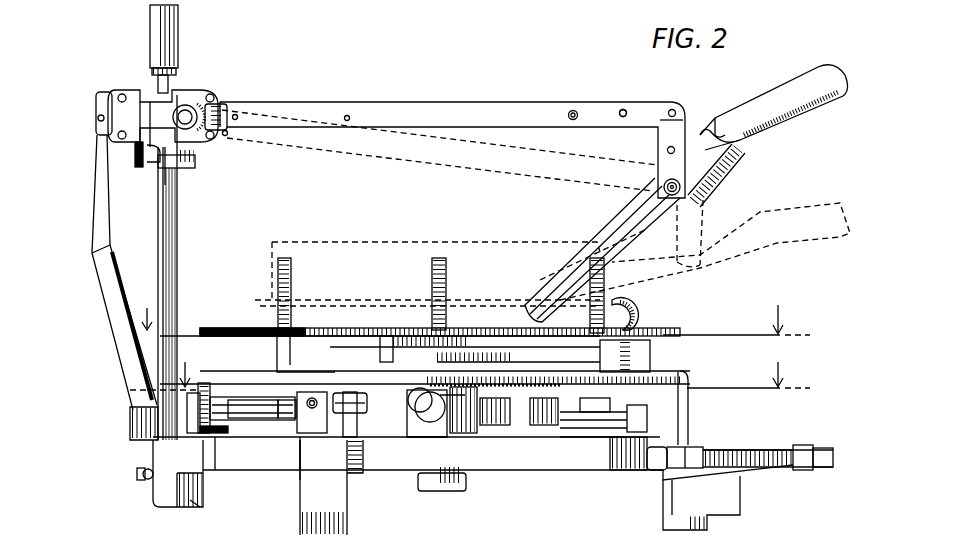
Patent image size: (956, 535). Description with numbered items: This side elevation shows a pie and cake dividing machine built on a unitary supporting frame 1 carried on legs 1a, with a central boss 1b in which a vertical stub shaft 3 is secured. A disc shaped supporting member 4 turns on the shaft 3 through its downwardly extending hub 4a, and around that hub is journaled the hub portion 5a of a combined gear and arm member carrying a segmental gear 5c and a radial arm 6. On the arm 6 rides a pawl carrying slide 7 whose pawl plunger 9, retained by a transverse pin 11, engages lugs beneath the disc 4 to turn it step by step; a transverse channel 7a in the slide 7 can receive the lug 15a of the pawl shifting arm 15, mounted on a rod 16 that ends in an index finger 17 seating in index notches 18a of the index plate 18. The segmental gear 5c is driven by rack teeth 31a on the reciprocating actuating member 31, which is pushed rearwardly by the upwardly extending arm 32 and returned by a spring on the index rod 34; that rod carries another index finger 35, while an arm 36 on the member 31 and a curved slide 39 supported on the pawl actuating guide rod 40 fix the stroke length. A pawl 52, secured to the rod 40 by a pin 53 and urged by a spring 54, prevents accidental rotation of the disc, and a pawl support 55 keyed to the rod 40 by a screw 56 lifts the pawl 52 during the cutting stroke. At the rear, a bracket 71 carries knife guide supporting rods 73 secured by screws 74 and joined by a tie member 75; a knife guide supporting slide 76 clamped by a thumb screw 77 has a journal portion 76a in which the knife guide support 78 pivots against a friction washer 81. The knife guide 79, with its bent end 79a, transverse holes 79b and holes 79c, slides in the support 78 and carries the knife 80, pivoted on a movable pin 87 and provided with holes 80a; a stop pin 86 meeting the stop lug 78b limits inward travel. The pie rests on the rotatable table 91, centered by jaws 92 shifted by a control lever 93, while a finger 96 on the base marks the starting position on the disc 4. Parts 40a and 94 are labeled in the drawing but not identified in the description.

The supporting frame 1 is at (608, 470).
The legs 1a is at (703, 527).
The boss 1b is at (436, 490).
The vertical stub shaft 3 is at (470, 310).
The supporting disc 4 is at (716, 378).
The hub 4a is at (343, 337).
The hub portion 5a is at (410, 405).
The segmental gear 5c is at (520, 415).
The arm 6 is at (420, 425).
The pawl carrying slide 7 is at (432, 437).
The transverse channel 7a is at (456, 492).
The pawl plunger 9 is at (457, 345).
The transverse pin 11 is at (474, 380).
The pawl shifting arm 15 is at (612, 445).
The lug 15a is at (556, 432).
The rod 16 is at (658, 470).
The index finger 17 is at (703, 455).
The index plate 18 is at (828, 468).
The index notches 18a is at (776, 450).
The actuating member 31 is at (240, 400).
The rack teeth 31a is at (612, 420).
The upwardly extending arm 32 is at (112, 310).
The index rod 34 is at (780, 468).
The index finger 35 is at (808, 446).
The arm 36 is at (645, 426).
The slide 39 is at (305, 440).
The pawl actuating guide rod 40 is at (265, 420).
The bearing 40a is at (297, 417).
The pawl 52 is at (208, 385).
The pin 53 is at (221, 433).
The spring 54 is at (199, 507).
The pawl support 55 is at (324, 425).
The screw 56 is at (313, 398).
The knife guide supporting rod bracket 71 is at (160, 500).
The knife guide supporting rods 73 is at (163, 237).
The screws 74 is at (137, 476).
The tie member 75 is at (152, 18).
The knife guide supporting slide 76 is at (160, 168).
The journal portion 76a is at (216, 102).
The thumb screw 77 is at (134, 157).
The knife guide support 78 is at (140, 92).
The stop lug 78b is at (227, 136).
The knife guide 79 is at (450, 112).
The outwardly bent forward end 79a is at (680, 130).
The transverse holes 79b is at (345, 116).
The holes 79c is at (626, 110).
The knife 80 is at (745, 140).
The holes 80a is at (722, 160).
The friction creating washer 81 is at (185, 105).
The stop pin 86 is at (576, 110).
The movable pin 87 is at (668, 179).
The table 91 is at (665, 328).
The jaws 92 is at (332, 270).
The control lever 93 is at (632, 320).
The pin 94 is at (100, 120).
The finger 96 is at (689, 418).